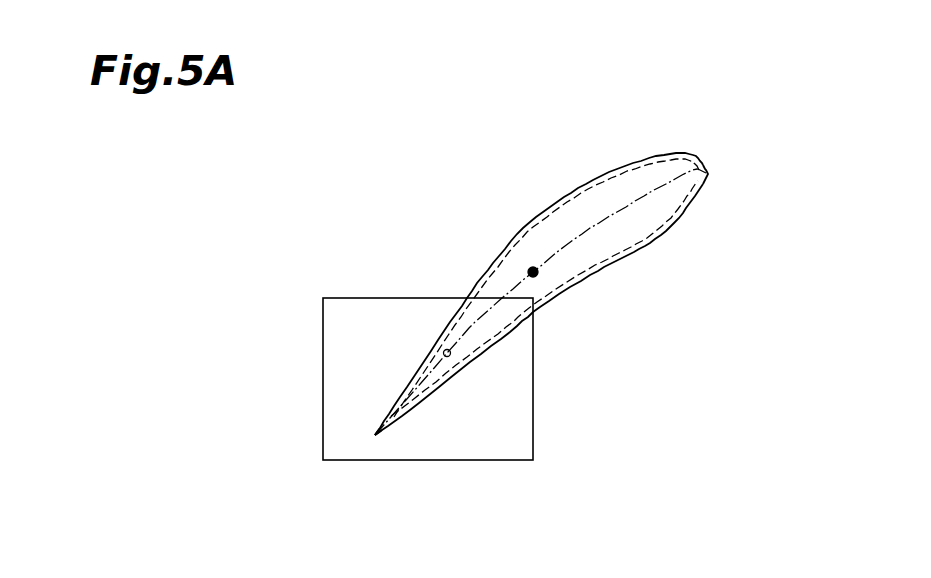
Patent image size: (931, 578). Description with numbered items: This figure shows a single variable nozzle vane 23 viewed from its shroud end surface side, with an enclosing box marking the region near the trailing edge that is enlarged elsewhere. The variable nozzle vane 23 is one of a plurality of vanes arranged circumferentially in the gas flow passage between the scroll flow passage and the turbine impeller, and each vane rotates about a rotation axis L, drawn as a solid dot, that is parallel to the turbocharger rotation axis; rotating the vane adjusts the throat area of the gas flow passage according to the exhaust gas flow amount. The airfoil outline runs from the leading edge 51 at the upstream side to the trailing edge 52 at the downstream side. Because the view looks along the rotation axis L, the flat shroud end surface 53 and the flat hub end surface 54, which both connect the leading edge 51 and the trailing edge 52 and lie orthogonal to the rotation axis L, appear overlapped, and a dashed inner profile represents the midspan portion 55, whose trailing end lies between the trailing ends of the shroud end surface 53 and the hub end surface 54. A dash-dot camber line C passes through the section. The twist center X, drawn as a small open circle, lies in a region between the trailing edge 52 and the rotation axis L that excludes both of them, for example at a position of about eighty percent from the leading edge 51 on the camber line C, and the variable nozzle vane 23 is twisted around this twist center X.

The variable nozzle vane 23 is at (550, 306).
The leading edge 51 is at (711, 153).
The trailing edge 52 is at (368, 452).
The shroud end surface 53 is at (655, 250).
The hub end surface 54 is at (602, 169).
The midspan portion 55 is at (649, 160).
The camber line C is at (546, 256).
The rotation axis L is at (535, 276).
The twist center X is at (450, 358).